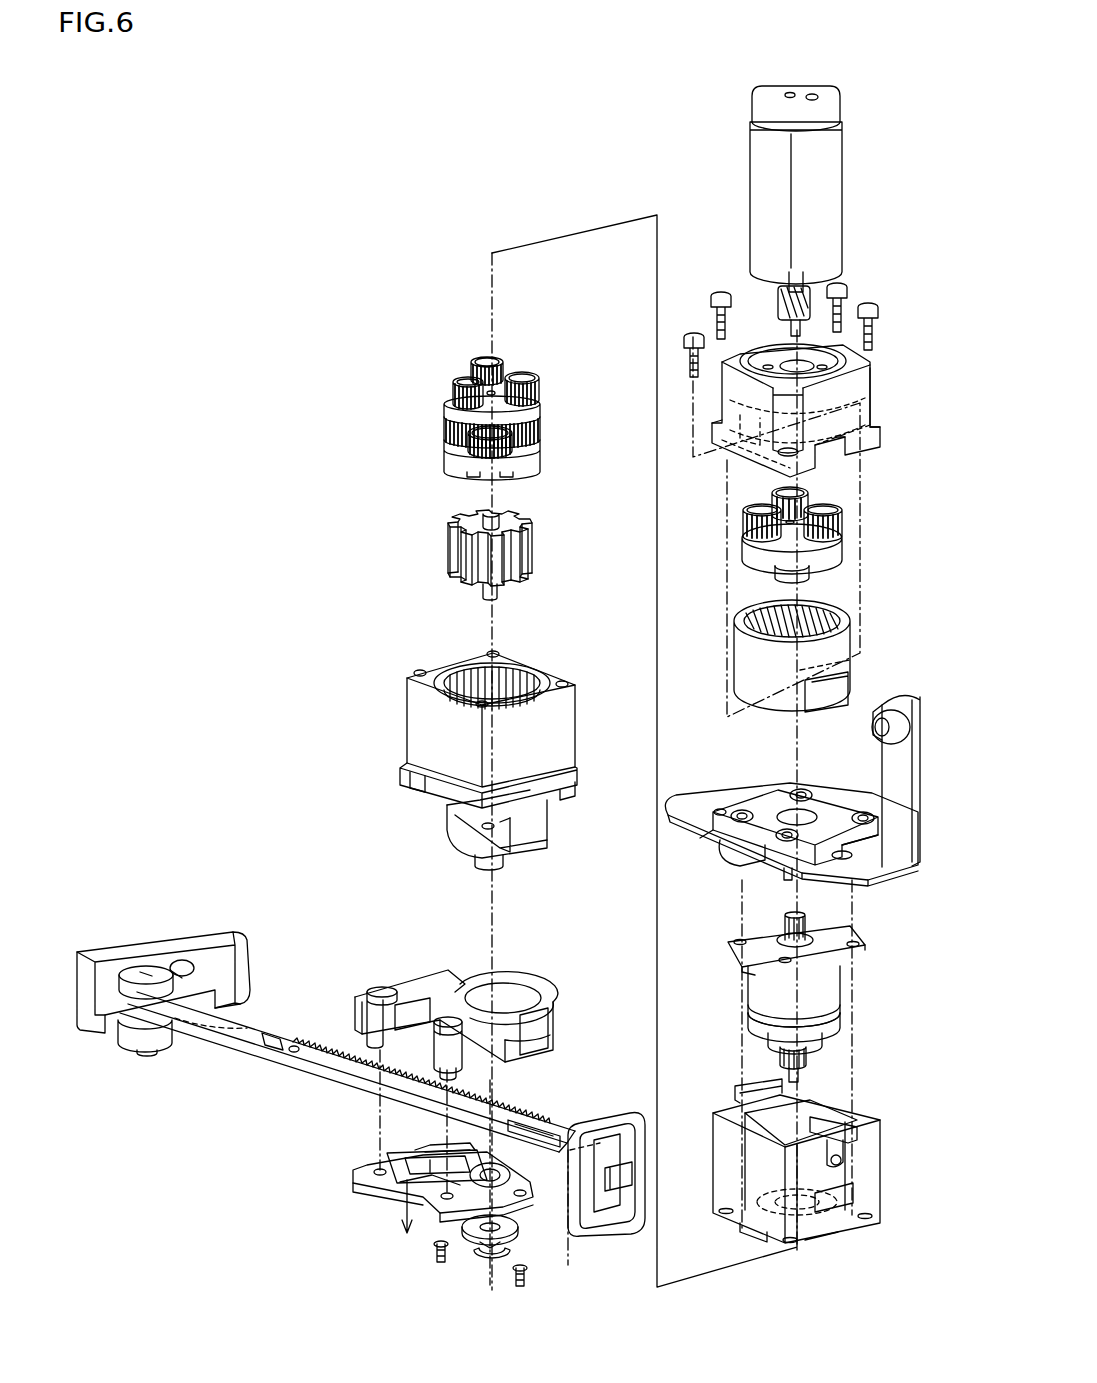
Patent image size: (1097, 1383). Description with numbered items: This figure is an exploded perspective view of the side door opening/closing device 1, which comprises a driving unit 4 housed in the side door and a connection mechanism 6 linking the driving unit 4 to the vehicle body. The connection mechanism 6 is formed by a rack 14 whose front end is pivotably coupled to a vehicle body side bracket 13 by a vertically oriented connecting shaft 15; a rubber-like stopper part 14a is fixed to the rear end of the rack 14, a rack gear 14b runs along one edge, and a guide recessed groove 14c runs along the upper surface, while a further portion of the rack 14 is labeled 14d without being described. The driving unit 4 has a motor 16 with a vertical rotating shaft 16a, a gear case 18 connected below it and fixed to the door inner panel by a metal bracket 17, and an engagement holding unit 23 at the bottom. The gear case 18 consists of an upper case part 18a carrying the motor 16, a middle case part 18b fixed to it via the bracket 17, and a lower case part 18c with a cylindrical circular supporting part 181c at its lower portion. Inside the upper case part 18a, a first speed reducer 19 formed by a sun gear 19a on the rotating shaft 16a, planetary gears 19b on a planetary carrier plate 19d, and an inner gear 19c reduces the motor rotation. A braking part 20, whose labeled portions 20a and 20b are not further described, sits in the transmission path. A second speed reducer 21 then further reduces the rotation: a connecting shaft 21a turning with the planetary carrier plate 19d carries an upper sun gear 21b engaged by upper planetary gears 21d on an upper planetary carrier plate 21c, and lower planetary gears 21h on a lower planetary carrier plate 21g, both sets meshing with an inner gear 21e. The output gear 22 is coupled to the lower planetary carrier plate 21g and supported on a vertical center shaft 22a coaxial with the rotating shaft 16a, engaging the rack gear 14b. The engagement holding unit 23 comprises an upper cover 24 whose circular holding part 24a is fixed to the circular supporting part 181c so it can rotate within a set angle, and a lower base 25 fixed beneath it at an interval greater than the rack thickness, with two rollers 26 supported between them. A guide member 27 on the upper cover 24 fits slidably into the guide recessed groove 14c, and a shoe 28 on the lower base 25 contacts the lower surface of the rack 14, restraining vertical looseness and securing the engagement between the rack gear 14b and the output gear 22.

The side door opening/closing device 1 is at (320, 578).
The driving unit 4 is at (890, 390).
The connection mechanism 6 is at (343, 1132).
The vehicle body side bracket 13 is at (192, 926).
The rack 14 is at (270, 1013).
The stopper part 14a is at (578, 1222).
The rack gear 14b is at (520, 1118).
The guide recessed groove 14c is at (286, 1066).
The rack bar 14d is at (310, 1100).
The connecting shaft 15 is at (143, 960).
The motor 16 is at (745, 163).
The rotating shaft 16a is at (790, 332).
The bracket 17 is at (870, 874).
The gear case 18 is at (873, 382).
The upper case part 18a is at (872, 418).
The middle case part 18b is at (880, 1150).
The lower case part 18c is at (402, 724).
The circular supporting part 181c is at (548, 824).
The first speed reducer 19 is at (848, 541).
The sun gear 19a is at (783, 294).
The planetary gears 19b is at (746, 526).
The inner gear 19c is at (840, 608).
The planetary carrier plate 19d is at (770, 545).
The braking part 20 is at (843, 978).
The motor flange 20a is at (858, 937).
The motor end portion 20b is at (835, 1033).
The second speed reducer 21 is at (432, 406).
The connecting shaft 21a is at (782, 937).
The upper sun gear 21b is at (778, 1054).
The upper planetary carrier plate 21c is at (535, 408).
The upper planetary gears 21d is at (450, 380).
The inner gear 21e is at (500, 668).
The lower planetary carrier plate 21g is at (540, 452).
The lower planetary gears 21h is at (542, 430).
The output gear 22 is at (452, 540).
The center shaft 22a is at (481, 594).
The engagement holding unit 23 is at (440, 963).
The upper cover 24 is at (553, 1021).
The holding part 24a is at (512, 990).
The lower base 25 is at (372, 1183).
The rollers 26 is at (378, 1017).
The guide member 27 is at (538, 1127).
The shoe 28 is at (427, 1178).